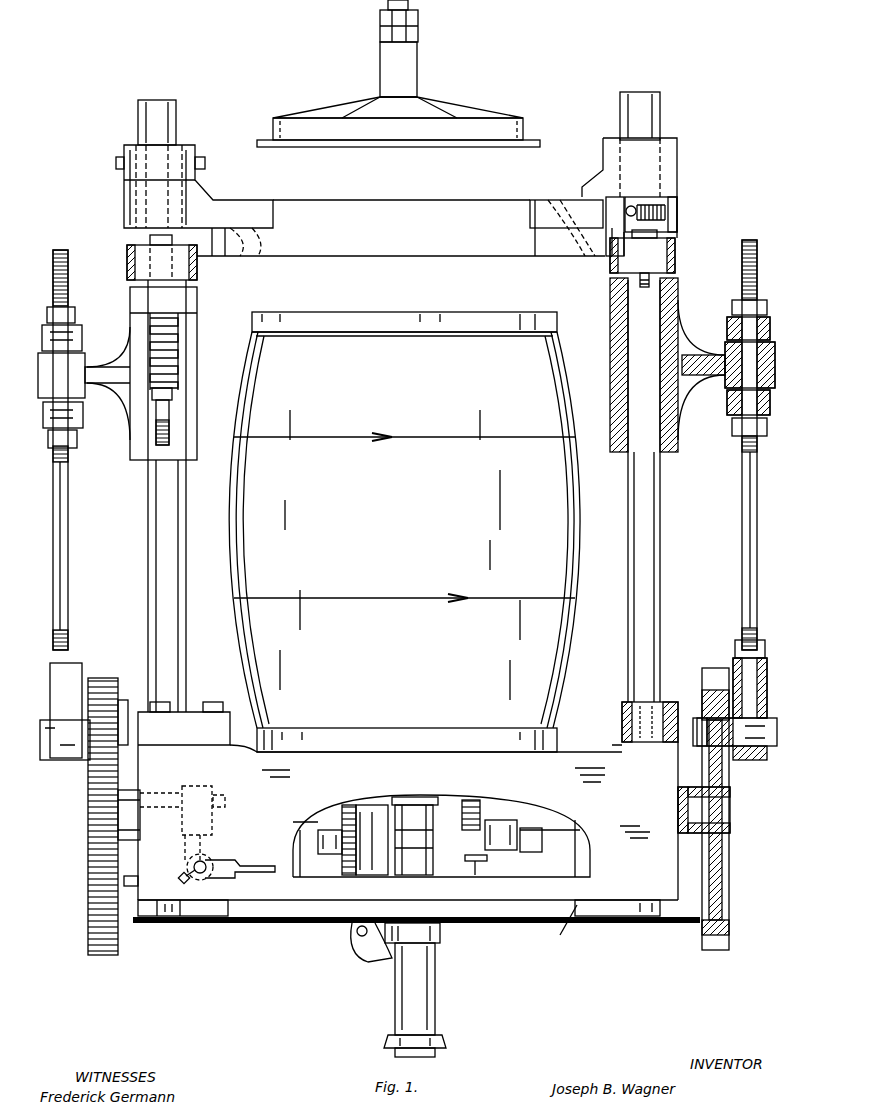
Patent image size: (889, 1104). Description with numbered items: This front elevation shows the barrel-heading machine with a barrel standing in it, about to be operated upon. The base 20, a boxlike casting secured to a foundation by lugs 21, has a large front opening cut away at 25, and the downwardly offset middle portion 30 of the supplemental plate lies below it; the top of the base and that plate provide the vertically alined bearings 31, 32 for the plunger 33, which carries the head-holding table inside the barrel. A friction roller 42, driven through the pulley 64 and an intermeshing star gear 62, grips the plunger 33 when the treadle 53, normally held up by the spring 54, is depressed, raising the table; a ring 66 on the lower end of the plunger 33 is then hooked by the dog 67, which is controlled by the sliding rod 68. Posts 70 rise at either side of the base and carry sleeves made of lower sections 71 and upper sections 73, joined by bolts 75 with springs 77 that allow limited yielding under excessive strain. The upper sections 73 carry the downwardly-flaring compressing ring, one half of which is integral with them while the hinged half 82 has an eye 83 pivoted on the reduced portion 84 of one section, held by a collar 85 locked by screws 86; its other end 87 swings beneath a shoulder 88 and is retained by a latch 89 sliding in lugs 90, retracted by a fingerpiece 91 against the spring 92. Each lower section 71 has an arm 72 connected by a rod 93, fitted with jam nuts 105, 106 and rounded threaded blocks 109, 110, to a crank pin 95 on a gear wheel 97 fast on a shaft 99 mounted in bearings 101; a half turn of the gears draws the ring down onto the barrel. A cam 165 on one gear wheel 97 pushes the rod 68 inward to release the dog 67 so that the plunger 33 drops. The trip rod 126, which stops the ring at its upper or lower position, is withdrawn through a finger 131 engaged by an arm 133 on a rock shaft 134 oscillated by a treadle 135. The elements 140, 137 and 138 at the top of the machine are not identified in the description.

The cap nut 140 is at (410, 6).
The conical hub 137 is at (431, 134).
The follower plate 138 is at (378, 147).
The hinged half of compressing ring 82 is at (401, 228).
The upper reduced portion 84 is at (124, 187).
The eye or hinge 83 is at (158, 195).
The collar 85 is at (124, 152).
The screws 86 is at (205, 162).
The upper sleeve section 73 is at (127, 262).
The posts 70 is at (156, 572).
The lower sleeve section 71 is at (135, 455).
The arm 72 is at (112, 352).
The rods 93 is at (55, 527).
The jam nut 105 is at (47, 314).
The threaded block 109 is at (43, 338).
The threaded block 110 is at (43, 414).
The jam nut 106 is at (48, 439).
The spring 77 is at (180, 338).
The bolt 75 is at (170, 418).
The end of hinged ring half 87 is at (568, 210).
The shoulder 88 is at (612, 190).
The latch 89 is at (650, 212).
The lugs 90 is at (677, 225).
The fingerpiece 91 is at (633, 205).
The spring 92 is at (650, 203).
The base 20 is at (408, 801).
The lugs 21 is at (172, 916).
The middle portion of supplemental plate 30 is at (332, 924).
The opening 25 is at (559, 927).
The bearing 31 is at (420, 796).
The friction roller 42 is at (414, 840).
The spring 54 is at (482, 805).
The star gear 62 is at (342, 860).
The pulley 64 is at (497, 835).
The bearings 101 is at (303, 820).
The treadle 53 is at (472, 862).
The gear wheels 97 is at (98, 890).
The cam 165 is at (123, 705).
The crank pins 95 is at (66, 765).
The shafts 99 is at (136, 793).
The rod 68 is at (131, 886).
The rod 126 is at (226, 798).
The finger 131 is at (212, 822).
The arm 133 is at (185, 828).
The rock shaft 134 is at (206, 872).
The treadle 135 is at (266, 872).
The bearing 32 is at (440, 929).
The plunger 33 is at (428, 998).
The ring 66 is at (388, 1042).
The dog 67 is at (360, 952).